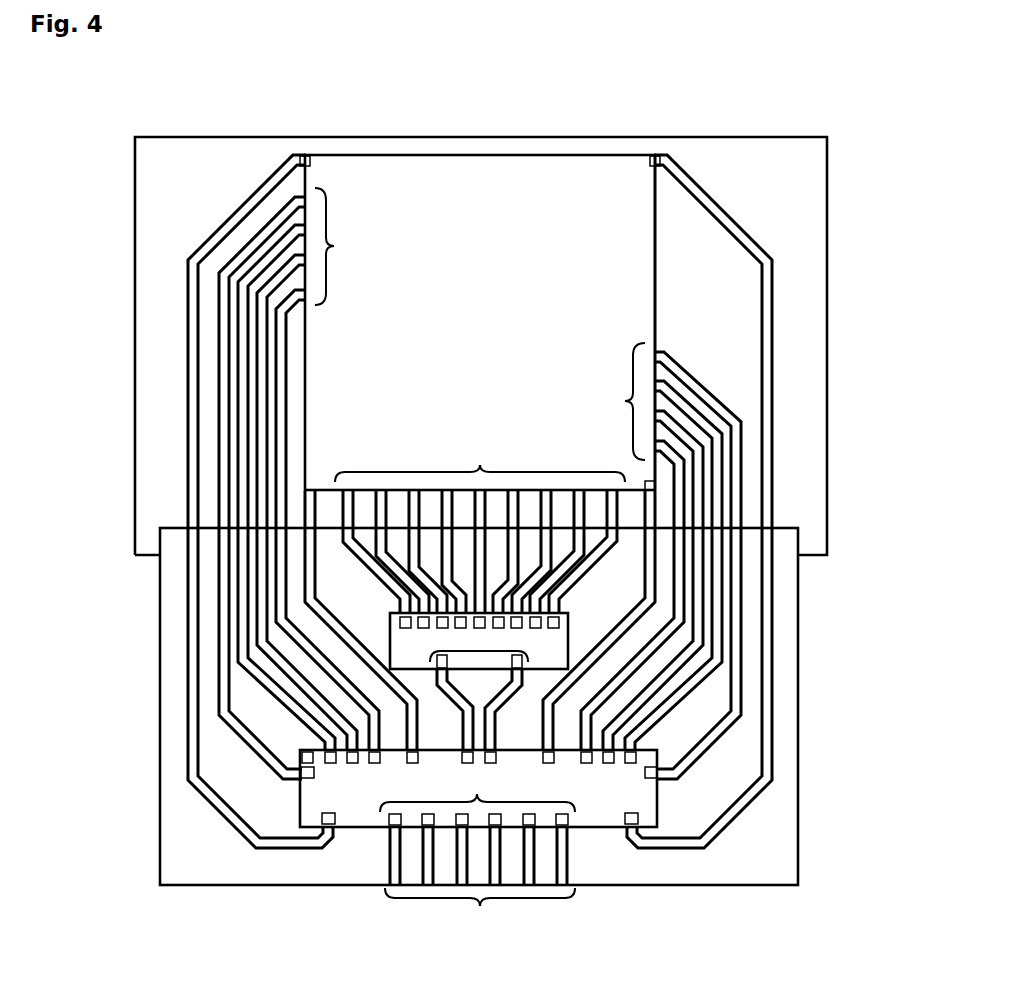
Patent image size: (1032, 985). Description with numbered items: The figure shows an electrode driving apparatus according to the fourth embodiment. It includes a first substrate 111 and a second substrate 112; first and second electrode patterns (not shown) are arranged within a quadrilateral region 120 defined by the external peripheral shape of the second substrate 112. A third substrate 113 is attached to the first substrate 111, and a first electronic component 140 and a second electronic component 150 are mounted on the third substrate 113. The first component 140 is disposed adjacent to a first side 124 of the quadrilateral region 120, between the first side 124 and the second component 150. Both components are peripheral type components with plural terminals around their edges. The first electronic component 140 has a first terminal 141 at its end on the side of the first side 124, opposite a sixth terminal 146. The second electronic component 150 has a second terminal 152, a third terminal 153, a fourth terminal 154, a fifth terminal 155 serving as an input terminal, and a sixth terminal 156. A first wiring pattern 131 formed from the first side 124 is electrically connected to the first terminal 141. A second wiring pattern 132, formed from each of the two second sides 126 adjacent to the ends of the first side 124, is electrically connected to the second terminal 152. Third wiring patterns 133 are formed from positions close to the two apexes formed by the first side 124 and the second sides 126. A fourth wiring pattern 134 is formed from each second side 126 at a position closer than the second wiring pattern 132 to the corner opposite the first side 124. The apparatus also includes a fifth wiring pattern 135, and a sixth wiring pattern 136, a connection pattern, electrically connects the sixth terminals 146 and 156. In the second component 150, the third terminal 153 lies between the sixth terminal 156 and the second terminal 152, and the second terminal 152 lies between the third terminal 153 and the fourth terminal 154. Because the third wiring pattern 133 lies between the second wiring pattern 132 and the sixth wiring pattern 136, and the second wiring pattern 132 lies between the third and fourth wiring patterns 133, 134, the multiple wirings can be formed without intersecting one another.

The first substrate 111 is at (784, 146).
The second substrate 112 is at (572, 175).
The third substrate 113 is at (716, 880).
The quadrilateral region 120 is at (658, 338).
The first side 124 is at (660, 488).
The second side 126 is at (306, 178).
The first wiring pattern 131 is at (480, 524).
The second wiring pattern 132 is at (480, 324).
The third wiring pattern 133 is at (652, 560).
The fourth wiring pattern 134 is at (193, 316).
The fifth wiring pattern 135 is at (480, 886).
The sixth wiring pattern 136 is at (240, 662).
The first electronic component 140 is at (412, 643).
The first terminal 141 is at (490, 585).
The sixth terminal 146 is at (478, 650).
The second electronic component 150 is at (657, 810).
The second terminal 152 is at (378, 760).
The third terminal 153 is at (222, 712).
The fourth terminal 154 is at (328, 824).
The fifth terminal 155 is at (477, 795).
The sixth terminal 156 is at (500, 700).